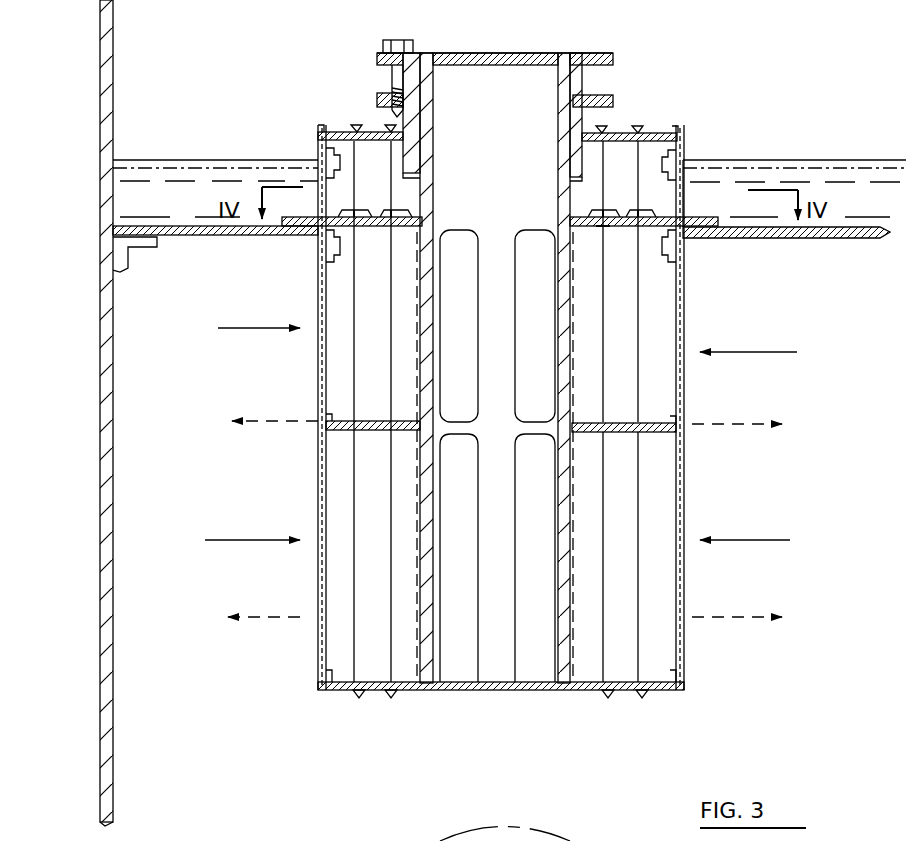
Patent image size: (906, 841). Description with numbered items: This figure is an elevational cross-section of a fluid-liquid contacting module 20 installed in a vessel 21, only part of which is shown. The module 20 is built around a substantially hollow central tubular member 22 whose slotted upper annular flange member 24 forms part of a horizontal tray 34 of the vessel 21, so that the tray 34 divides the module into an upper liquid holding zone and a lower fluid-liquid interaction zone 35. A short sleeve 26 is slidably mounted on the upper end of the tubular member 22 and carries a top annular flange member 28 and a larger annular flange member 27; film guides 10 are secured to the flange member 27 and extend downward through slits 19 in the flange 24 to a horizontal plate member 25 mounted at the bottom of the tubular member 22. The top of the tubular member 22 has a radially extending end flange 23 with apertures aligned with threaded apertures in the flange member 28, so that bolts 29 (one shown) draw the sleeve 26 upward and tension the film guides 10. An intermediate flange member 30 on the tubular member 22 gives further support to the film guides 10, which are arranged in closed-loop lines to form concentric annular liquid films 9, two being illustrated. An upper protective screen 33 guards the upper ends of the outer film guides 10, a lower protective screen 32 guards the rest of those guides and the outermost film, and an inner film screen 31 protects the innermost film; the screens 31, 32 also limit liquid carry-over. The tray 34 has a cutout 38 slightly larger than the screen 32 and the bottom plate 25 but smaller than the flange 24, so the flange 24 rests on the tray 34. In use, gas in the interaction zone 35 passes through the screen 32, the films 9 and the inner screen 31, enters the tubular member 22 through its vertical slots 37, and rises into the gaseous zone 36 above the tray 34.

The annular series of films 9 is at (640, 592).
The film guides 10 is at (640, 355).
The slits 19 is at (601, 228).
The module 20 is at (318, 568).
The vessel 21 is at (100, 152).
The central tubular member 22 is at (572, 78).
The end flange 23 is at (377, 58).
The upper annular flange member 24 is at (706, 222).
The horizontal plate member 25 is at (686, 688).
The sleeve 26 is at (588, 122).
The larger annular flange member 27 is at (320, 128).
The top annular flange member 28 is at (377, 98).
The bolts 29 is at (403, 40).
The intermediate flange member 30 is at (345, 420).
The inner film screen 31 is at (416, 492).
The lower protective screen 32 is at (686, 483).
The upper protective screen 33 is at (326, 158).
The tray 34 is at (265, 224).
The fluid-liquid interaction zone 35 is at (177, 402).
The gaseous zone 36 is at (170, 115).
The vertical slots 37 is at (518, 232).
The cutouts 38 is at (320, 244).